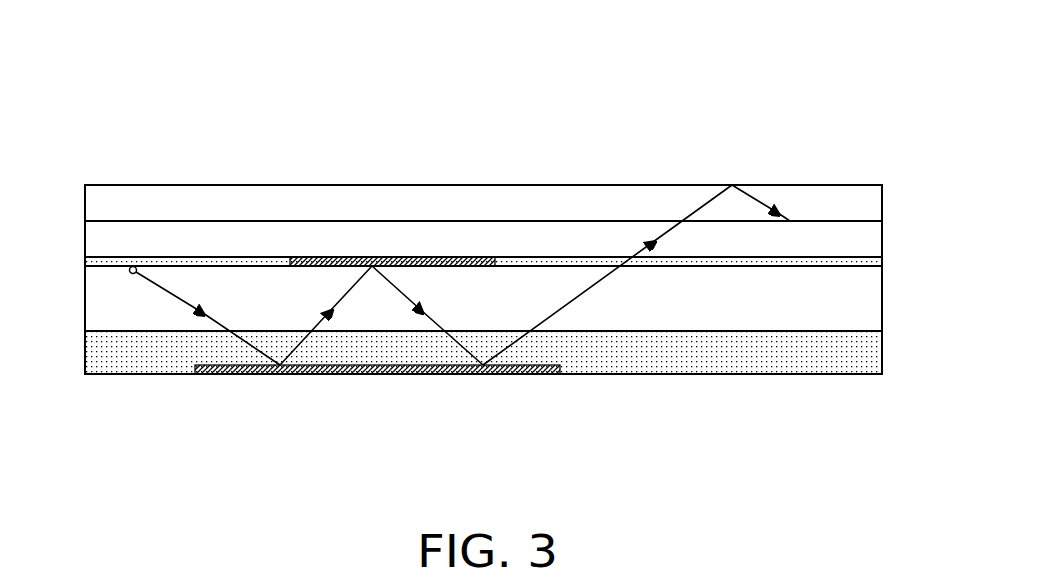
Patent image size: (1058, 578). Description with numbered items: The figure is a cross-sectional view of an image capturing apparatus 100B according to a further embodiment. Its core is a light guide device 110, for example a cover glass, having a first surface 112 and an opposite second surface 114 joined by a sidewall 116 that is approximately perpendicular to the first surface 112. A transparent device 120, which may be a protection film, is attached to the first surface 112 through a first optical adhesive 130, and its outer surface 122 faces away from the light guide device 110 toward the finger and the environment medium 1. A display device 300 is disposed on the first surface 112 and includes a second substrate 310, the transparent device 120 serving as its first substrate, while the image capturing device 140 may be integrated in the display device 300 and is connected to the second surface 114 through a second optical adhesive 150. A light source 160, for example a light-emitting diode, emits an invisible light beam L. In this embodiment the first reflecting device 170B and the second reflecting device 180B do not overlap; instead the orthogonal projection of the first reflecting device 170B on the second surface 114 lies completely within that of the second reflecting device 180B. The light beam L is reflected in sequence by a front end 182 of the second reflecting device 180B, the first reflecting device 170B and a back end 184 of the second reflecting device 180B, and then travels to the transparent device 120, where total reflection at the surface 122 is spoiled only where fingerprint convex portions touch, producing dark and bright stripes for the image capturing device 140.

The environment medium 1 is at (834, 40).
The image capturing apparatus 100B is at (940, 449).
The light guide device 110 is at (867, 300).
The first surface 112 is at (843, 263).
The second surface 114 is at (846, 334).
The sidewall 116 is at (81, 296).
The transparent device 120 is at (872, 233).
The surface 122 is at (803, 218).
The first optical adhesive 130 is at (878, 262).
The image capturing device 140 is at (483, 221).
The second optical adhesive 150 is at (878, 337).
The light source 160 is at (133, 265).
The first reflecting device 170B is at (410, 257).
The second reflecting device 180B is at (348, 376).
The front end 182 is at (257, 378).
The back end 184 is at (492, 378).
The display device 300 is at (940, 124).
The second substrate 310 is at (858, 203).
The light beam L is at (174, 306).